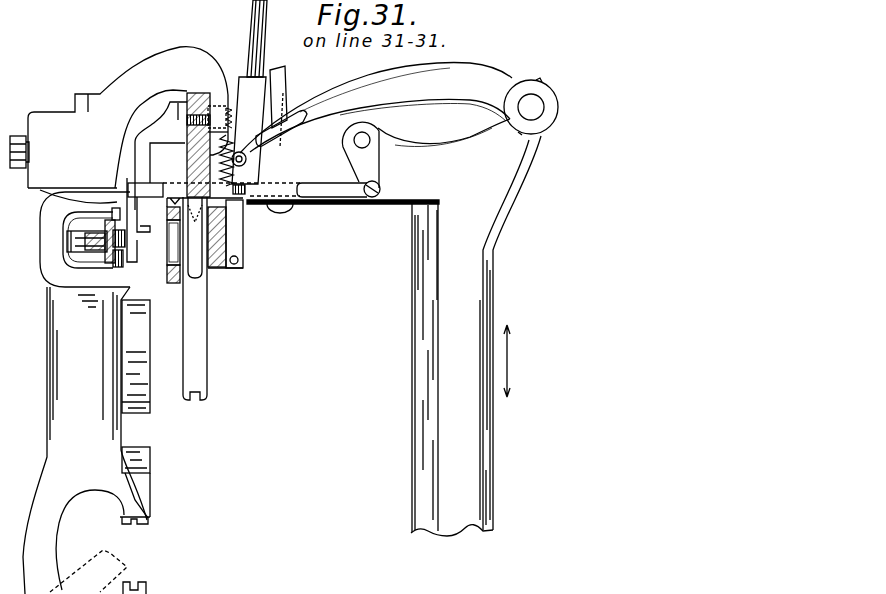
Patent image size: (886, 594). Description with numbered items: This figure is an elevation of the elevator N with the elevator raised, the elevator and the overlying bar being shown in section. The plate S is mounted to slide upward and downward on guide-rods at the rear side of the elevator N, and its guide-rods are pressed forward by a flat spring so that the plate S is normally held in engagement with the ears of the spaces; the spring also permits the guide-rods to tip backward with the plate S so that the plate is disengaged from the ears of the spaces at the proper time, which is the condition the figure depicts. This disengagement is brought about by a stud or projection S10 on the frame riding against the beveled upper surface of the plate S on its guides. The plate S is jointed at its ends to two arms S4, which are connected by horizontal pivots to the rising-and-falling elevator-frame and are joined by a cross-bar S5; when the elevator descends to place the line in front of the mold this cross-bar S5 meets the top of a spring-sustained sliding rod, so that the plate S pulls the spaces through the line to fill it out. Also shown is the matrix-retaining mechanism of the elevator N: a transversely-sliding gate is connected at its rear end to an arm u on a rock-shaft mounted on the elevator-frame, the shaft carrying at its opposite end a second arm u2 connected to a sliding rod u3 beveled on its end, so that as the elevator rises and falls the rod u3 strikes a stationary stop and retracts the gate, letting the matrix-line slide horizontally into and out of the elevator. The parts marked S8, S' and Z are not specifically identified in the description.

The plate S is at (260, 71).
The stud or projection S10 is at (244, 118).
The wedge S8 is at (284, 86).
The arms S4 is at (399, 108).
The cross-bar S5 is at (306, 132).
The block S' is at (230, 248).
The arm u is at (155, 196).
The second arm u2 is at (380, 172).
The sliding rod u3 is at (325, 196).
The elevator N is at (390, 202).
The rod Z is at (207, 355).